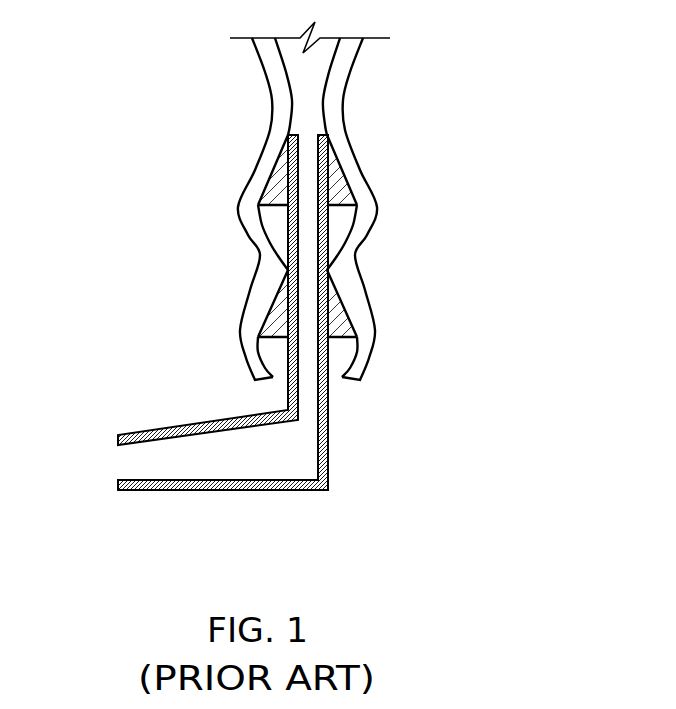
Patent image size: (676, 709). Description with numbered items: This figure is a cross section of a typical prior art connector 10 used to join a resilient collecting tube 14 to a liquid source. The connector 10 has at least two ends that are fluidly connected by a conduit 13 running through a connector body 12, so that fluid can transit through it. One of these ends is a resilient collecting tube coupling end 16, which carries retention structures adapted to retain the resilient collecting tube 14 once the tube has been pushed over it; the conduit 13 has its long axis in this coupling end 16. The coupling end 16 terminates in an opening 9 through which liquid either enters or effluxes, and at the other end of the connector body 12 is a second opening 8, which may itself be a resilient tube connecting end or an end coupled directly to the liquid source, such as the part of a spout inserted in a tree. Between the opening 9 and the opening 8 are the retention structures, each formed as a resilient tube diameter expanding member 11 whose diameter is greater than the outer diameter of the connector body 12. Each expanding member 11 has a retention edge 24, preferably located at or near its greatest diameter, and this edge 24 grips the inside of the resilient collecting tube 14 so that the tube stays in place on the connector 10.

The opening 8 is at (235, 312).
The opening 9 is at (307, 133).
The connector 10 is at (269, 305).
The resilient tube diameter expanding member 11 is at (270, 183).
The connector body 12 is at (328, 388).
The conduit 13 is at (312, 404).
The resilient collecting tube 14 is at (339, 209).
The resilient collecting tube coupling end 16 is at (339, 209).
The retention edge 24 is at (361, 208).